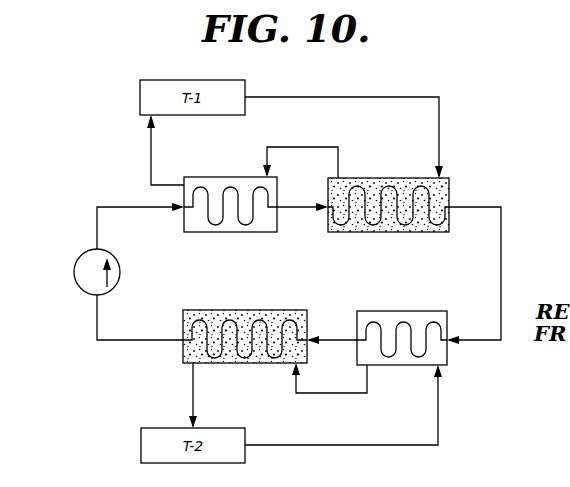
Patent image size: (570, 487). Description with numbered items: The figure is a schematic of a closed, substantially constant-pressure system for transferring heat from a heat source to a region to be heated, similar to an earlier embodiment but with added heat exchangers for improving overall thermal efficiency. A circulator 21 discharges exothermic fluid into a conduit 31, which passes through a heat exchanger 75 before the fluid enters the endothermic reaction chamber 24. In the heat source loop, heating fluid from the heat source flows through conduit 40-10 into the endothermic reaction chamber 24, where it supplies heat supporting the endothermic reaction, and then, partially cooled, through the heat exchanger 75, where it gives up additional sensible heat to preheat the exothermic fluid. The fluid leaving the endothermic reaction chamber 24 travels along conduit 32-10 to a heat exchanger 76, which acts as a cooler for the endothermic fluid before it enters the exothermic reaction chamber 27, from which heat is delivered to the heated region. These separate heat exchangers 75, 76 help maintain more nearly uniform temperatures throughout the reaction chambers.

The circulator 21 is at (81, 291).
The conduit 31 is at (124, 207).
The heat exchanger 75 is at (204, 177).
The conduit 40-10 is at (303, 147).
The endothermic reaction chamber 24 is at (365, 232).
The conduit 32-10 is at (501, 255).
The exothermic reaction chamber 27 is at (240, 310).
The heat exchanger 76 is at (391, 311).